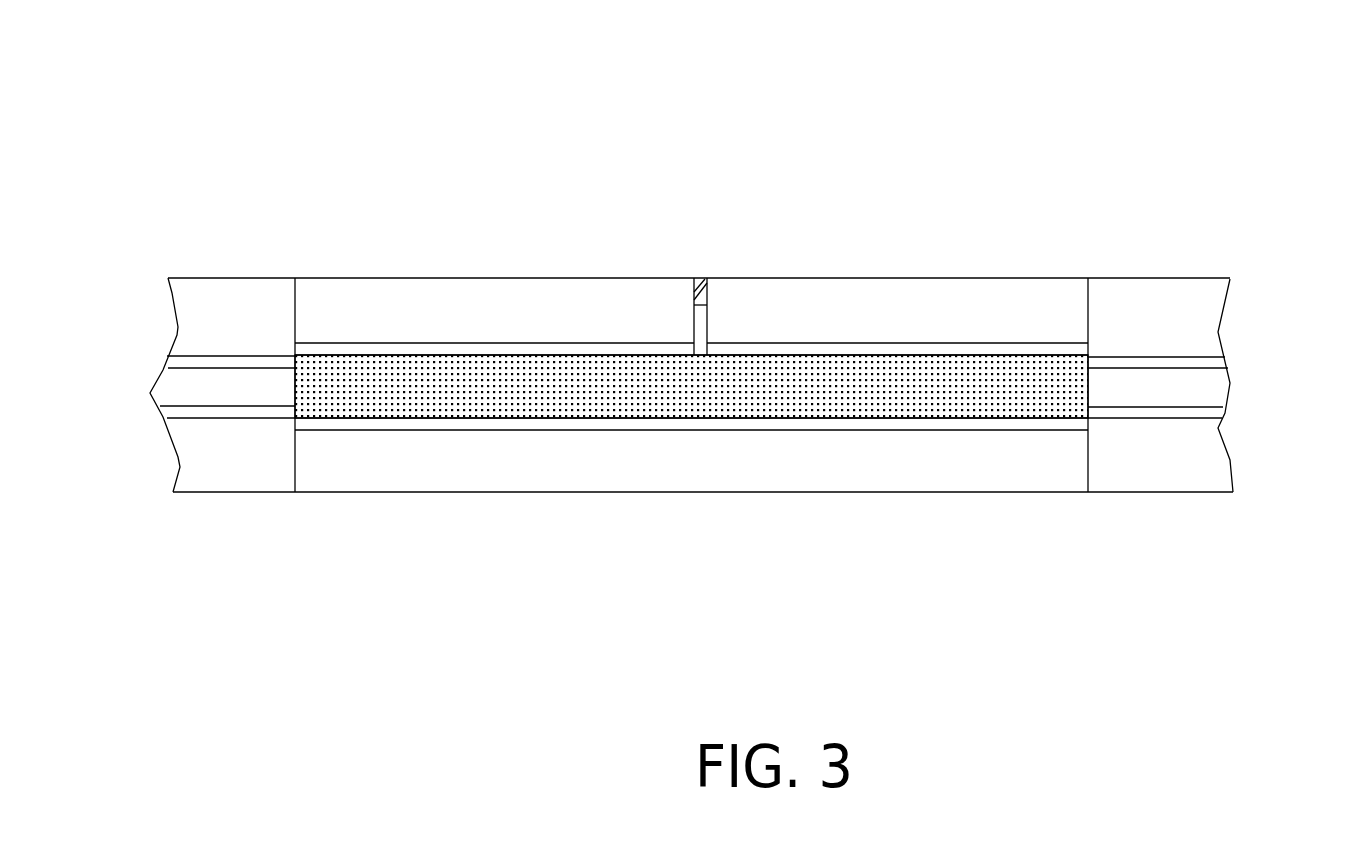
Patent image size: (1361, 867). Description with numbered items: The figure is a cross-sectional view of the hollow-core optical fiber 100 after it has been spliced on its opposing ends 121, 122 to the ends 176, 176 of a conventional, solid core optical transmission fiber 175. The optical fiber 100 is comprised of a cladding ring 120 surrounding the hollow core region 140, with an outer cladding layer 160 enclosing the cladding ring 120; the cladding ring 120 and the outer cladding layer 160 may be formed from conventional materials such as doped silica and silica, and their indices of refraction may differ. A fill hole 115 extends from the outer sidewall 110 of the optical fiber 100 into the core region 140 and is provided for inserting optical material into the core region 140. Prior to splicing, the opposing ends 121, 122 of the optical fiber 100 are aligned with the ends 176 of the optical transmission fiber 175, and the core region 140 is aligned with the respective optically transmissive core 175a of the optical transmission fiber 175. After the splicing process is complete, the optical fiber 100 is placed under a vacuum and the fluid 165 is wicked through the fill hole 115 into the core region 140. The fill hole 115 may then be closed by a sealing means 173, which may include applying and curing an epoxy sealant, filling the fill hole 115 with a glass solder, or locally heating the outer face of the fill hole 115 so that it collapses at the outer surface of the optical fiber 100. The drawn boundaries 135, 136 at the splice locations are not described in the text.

The optical fiber 100 is at (524, 502).
The outer sidewall 110 is at (750, 278).
The fill hole 115 is at (692, 312).
The cladding ring 120 is at (937, 340).
The end of the optical fiber 121 is at (300, 444).
The end of the optical fiber 122 is at (1084, 470).
The first edge 135 is at (290, 472).
The second edge 136 is at (1090, 445).
The hollow core region 140 is at (410, 365).
The outer cladding layer 160 is at (820, 318).
The fluid 165 is at (595, 380).
The sealing means 173 is at (705, 280).
The optical transmission fiber 175 is at (203, 318).
The optically transmissive core 175a is at (200, 386).
The end of the optical transmission fiber 176 is at (288, 318).